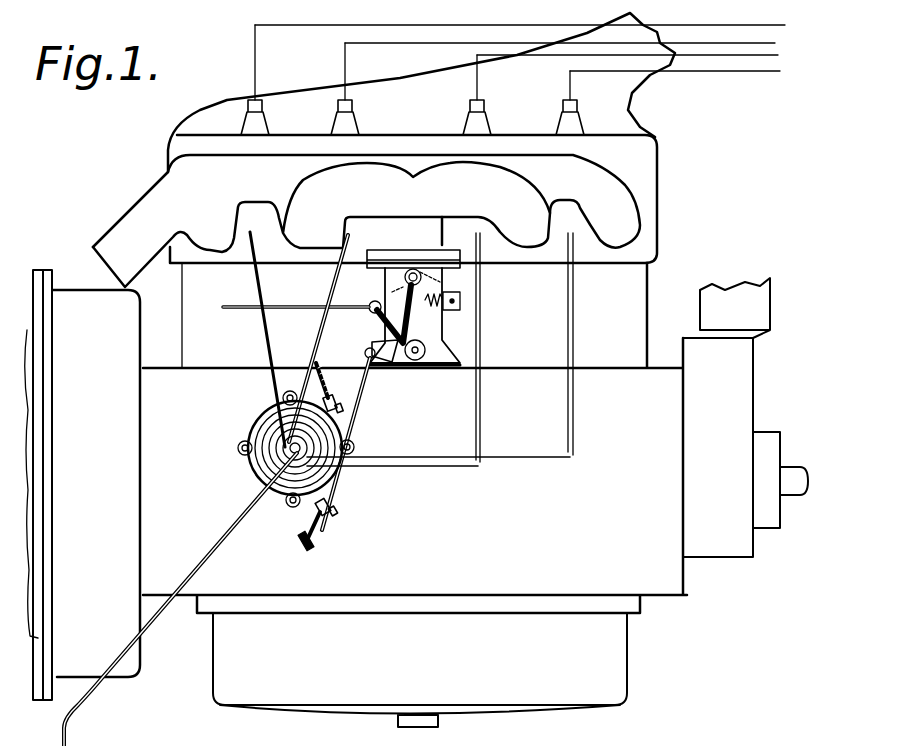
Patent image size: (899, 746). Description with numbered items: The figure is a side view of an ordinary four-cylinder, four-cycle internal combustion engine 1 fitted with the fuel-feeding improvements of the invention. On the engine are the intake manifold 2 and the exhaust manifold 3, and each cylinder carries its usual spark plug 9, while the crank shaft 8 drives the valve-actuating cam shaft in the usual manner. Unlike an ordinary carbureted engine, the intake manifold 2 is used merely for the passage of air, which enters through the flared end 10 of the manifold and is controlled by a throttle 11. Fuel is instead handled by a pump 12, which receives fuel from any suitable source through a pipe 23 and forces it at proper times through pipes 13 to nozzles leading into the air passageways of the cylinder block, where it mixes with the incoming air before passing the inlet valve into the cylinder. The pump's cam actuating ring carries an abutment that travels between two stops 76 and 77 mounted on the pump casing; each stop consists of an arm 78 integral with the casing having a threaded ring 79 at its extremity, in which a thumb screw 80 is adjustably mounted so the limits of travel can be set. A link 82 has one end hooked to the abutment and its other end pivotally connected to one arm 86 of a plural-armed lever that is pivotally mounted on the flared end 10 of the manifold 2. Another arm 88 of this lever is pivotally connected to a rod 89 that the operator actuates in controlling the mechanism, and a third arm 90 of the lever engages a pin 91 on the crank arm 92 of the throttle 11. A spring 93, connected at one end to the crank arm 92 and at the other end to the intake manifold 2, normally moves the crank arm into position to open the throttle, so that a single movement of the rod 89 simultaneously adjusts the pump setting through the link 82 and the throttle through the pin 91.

The internal combustion engine 1 is at (632, 290).
The intake manifold 2 is at (377, 177).
The exhaust manifold 3 is at (610, 182).
The crank shaft 8 is at (797, 477).
The spark plug 9 is at (332, 117).
The flared end 10 is at (457, 353).
The throttle 11 is at (427, 250).
The pump 12 is at (245, 463).
The pipes 13 is at (318, 337).
The pipe 23 is at (228, 533).
The stop 76 is at (340, 397).
The stop 77 is at (343, 507).
The arm 78 is at (275, 403).
The threaded ring 79 is at (284, 397).
The thumb screw 80 is at (366, 355).
The link 82 is at (353, 422).
The arm 86 is at (393, 363).
The arm 88 is at (375, 347).
The rod 89 is at (233, 305).
The arm 90 is at (420, 325).
The pin 91 is at (380, 313).
The crank arm 92 is at (397, 290).
The spring 93 is at (460, 300).